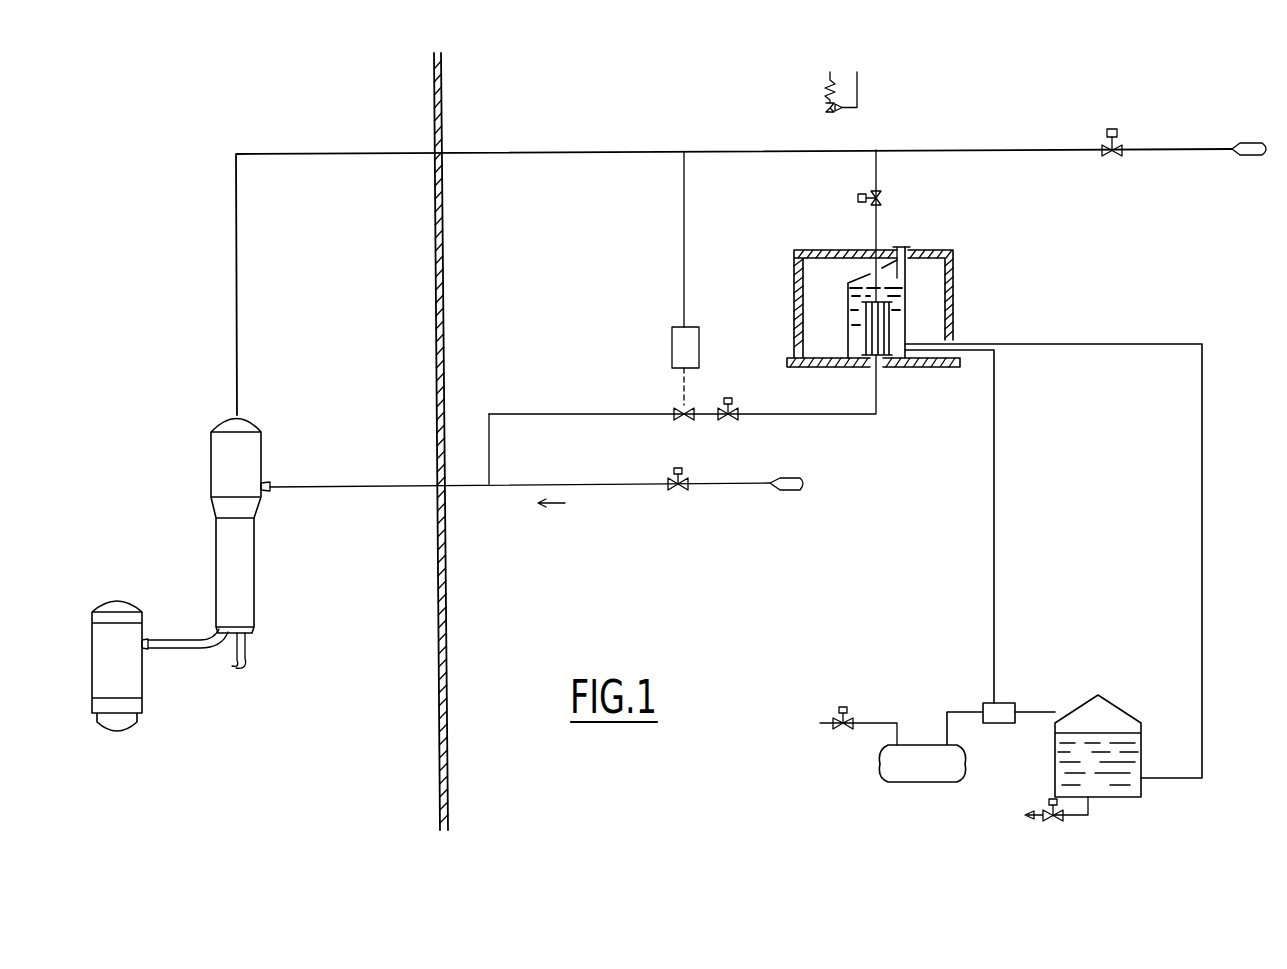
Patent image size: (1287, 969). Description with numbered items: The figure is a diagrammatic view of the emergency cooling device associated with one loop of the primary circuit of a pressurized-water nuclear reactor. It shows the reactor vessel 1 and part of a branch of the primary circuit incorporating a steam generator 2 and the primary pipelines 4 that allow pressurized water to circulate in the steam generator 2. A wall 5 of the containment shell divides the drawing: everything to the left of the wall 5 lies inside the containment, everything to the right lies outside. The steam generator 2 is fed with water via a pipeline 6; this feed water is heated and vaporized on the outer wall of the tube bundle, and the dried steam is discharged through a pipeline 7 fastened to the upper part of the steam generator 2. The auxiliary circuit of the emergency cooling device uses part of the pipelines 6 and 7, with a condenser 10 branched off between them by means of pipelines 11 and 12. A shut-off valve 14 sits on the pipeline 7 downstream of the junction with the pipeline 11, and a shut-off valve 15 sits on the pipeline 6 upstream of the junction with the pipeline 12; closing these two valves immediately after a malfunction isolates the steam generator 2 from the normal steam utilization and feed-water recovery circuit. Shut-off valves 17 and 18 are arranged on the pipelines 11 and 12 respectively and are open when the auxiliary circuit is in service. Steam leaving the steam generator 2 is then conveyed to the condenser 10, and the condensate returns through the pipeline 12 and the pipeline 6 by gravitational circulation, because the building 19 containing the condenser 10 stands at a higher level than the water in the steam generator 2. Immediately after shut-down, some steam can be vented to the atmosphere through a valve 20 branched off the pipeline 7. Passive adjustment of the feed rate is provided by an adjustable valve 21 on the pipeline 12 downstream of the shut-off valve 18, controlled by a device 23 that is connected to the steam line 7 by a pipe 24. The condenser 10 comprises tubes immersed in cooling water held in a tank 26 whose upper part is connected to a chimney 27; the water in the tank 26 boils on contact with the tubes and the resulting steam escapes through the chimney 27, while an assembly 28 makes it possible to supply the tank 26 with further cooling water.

The vessel 1 is at (143, 678).
The steam generator 2 is at (255, 582).
The primary pipelines 4 is at (242, 668).
The wall 5 is at (449, 633).
The pipeline 6 is at (355, 490).
The pipeline 7 is at (522, 152).
The condenser 10 is at (903, 325).
The pipeline 11 is at (878, 226).
The pipeline 12 is at (846, 414).
The shut-off valve 14 is at (1122, 142).
The shut-off valve 15 is at (676, 493).
The shut-off valve 17 is at (880, 197).
The shut-off valve 18 is at (730, 421).
The building 19 is at (954, 310).
The valve 20 is at (828, 127).
The adjustable valve 21 is at (680, 419).
The device 23 is at (664, 362).
The pipe 24 is at (684, 250).
The tank 26 is at (907, 275).
The chimney 27 is at (908, 250).
The assembly 28 is at (992, 775).